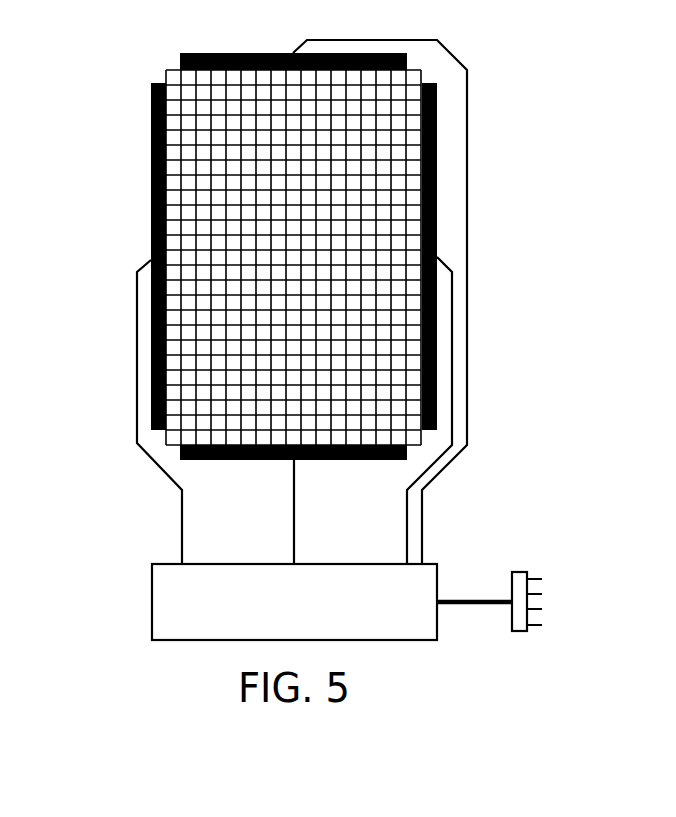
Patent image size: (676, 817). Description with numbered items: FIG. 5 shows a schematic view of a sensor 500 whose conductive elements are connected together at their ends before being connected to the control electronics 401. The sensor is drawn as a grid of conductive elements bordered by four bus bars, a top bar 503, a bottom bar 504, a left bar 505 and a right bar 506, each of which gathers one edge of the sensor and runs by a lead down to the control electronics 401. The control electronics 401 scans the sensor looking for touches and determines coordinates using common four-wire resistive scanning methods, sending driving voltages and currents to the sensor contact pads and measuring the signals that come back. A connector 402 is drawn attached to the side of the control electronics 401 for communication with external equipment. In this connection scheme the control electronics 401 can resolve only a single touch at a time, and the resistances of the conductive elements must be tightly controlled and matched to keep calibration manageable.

The display system 500 is at (60, 36).
The top electrode 503 is at (373, 300).
The bottom electrode 504 is at (355, 504).
The left electrode 505 is at (109, 323).
The right electrode 506 is at (482, 323).
The control electronics 401 is at (341, 615).
The connector 402 is at (529, 583).